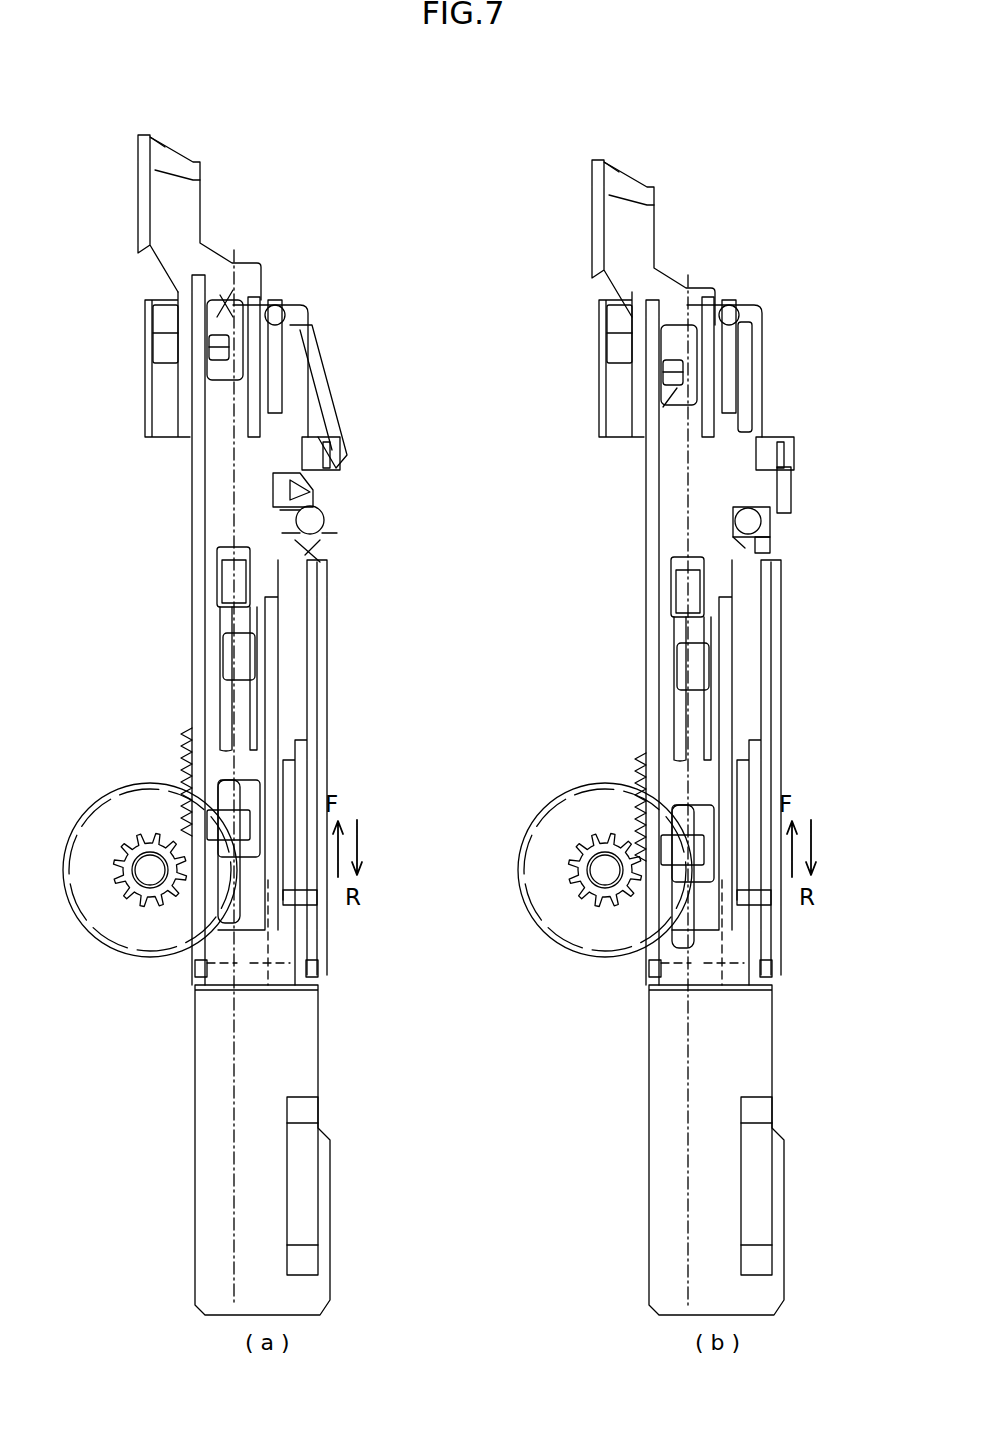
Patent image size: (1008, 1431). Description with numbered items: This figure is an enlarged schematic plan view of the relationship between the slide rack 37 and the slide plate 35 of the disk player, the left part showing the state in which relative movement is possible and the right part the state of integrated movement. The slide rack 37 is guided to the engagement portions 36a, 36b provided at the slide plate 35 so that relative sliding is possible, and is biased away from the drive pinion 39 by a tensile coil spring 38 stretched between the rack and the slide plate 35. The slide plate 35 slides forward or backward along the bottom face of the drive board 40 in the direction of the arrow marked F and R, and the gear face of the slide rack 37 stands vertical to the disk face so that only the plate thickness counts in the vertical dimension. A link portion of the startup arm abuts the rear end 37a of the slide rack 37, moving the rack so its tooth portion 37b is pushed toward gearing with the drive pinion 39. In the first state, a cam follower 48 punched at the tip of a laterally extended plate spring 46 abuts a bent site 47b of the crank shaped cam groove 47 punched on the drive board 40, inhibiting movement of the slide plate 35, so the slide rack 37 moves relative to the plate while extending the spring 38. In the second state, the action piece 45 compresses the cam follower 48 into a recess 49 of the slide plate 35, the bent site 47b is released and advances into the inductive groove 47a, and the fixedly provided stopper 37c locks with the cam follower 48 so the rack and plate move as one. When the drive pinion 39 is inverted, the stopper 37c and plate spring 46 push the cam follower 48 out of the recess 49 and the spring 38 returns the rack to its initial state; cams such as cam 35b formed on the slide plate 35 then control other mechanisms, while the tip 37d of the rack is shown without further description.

The slide plate 35 is at (143, 332).
The cam 35b is at (287, 1150).
The engagement portion 36a is at (255, 800).
The engagement portion 36b is at (222, 300).
The slide rack 37 is at (138, 205).
The end 37a is at (182, 164).
The tooth portion 37b is at (186, 733).
The stopper 37c is at (283, 535).
The inclined tip of lever 37d is at (168, 150).
The tensile coil spring 38 is at (318, 360).
The drive pinion 39 is at (165, 858).
The drive board 40 is at (378, 618).
The action piece 45 is at (273, 505).
The plate spring 46 is at (312, 307).
The crank shaped cam groove 47 is at (302, 460).
The inductive groove 47a is at (275, 588).
The bent site 47b is at (325, 540).
The cam follower 48 is at (318, 510).
The recess 49 is at (324, 522).